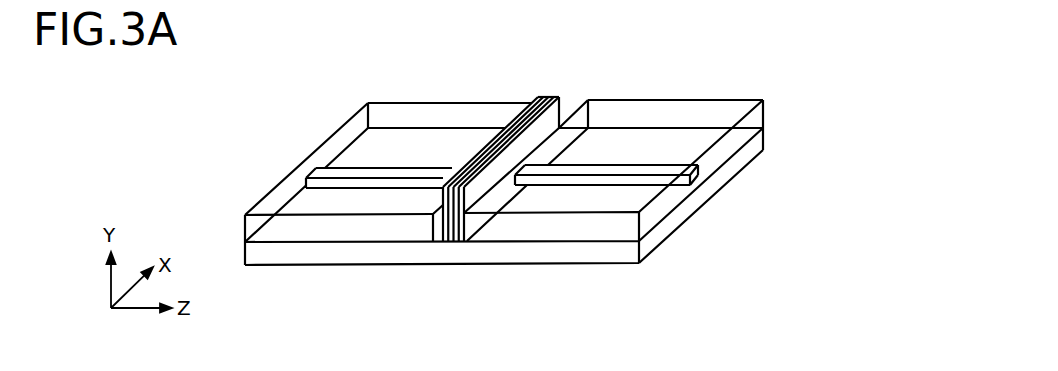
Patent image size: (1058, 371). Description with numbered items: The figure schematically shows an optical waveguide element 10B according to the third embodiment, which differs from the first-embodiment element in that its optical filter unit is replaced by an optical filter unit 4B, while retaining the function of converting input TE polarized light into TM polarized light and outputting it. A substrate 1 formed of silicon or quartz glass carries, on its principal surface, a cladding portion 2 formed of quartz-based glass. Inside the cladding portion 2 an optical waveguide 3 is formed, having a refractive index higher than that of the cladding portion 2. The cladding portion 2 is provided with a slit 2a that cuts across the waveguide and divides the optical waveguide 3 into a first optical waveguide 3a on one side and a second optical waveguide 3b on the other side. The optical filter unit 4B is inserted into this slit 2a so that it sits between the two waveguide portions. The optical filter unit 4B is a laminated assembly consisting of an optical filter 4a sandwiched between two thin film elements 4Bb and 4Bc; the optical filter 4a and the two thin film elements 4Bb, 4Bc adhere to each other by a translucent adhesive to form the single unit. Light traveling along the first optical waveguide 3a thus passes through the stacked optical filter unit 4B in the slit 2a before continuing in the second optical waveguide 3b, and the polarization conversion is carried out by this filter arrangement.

The substrate 1 is at (652, 242).
The cladding portion 2 is at (565, 82).
The slit 2a is at (576, 88).
The optical waveguide 3 is at (502, 260).
The first optical waveguide 3a is at (406, 181).
The second optical waveguide 3b is at (606, 236).
The optical filter unit 4B is at (487, 129).
The thin film element 4Bb is at (490, 141).
The optical filter 4a is at (508, 133).
The thin film element 4Bc is at (531, 124).
The optical waveguide element 10B is at (731, 79).